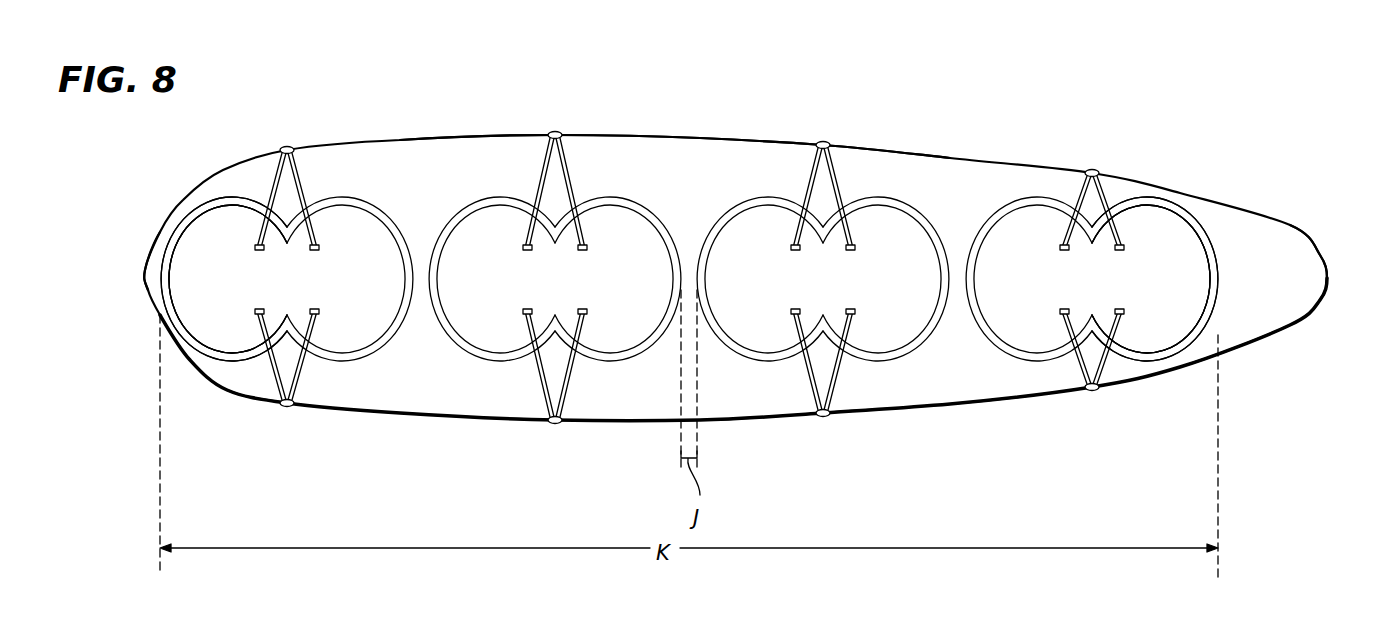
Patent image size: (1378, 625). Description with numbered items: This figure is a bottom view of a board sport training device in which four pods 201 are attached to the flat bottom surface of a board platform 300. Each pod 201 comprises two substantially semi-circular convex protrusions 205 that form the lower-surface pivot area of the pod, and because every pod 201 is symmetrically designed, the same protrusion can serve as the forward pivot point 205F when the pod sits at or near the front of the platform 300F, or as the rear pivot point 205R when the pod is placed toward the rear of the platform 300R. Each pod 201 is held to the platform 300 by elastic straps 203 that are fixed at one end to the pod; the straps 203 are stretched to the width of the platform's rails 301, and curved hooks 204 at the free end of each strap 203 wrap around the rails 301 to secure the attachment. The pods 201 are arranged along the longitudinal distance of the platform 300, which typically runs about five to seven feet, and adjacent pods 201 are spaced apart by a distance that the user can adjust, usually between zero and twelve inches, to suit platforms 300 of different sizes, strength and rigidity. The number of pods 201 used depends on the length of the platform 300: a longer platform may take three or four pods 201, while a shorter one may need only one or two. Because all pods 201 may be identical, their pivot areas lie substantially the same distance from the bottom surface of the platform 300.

The pod 201 is at (221, 328).
The straps 203 is at (268, 179).
The curved hooks 204 is at (293, 139).
The semi-circular convex protrusions 205 is at (360, 292).
The forward pivot point 205F is at (267, 292).
The rear pivot point 205R is at (1183, 292).
The platform 300 is at (450, 400).
The front of the platform 300F is at (144, 287).
The rear of the platform 300R is at (1330, 280).
The platform rails 301 is at (698, 138).